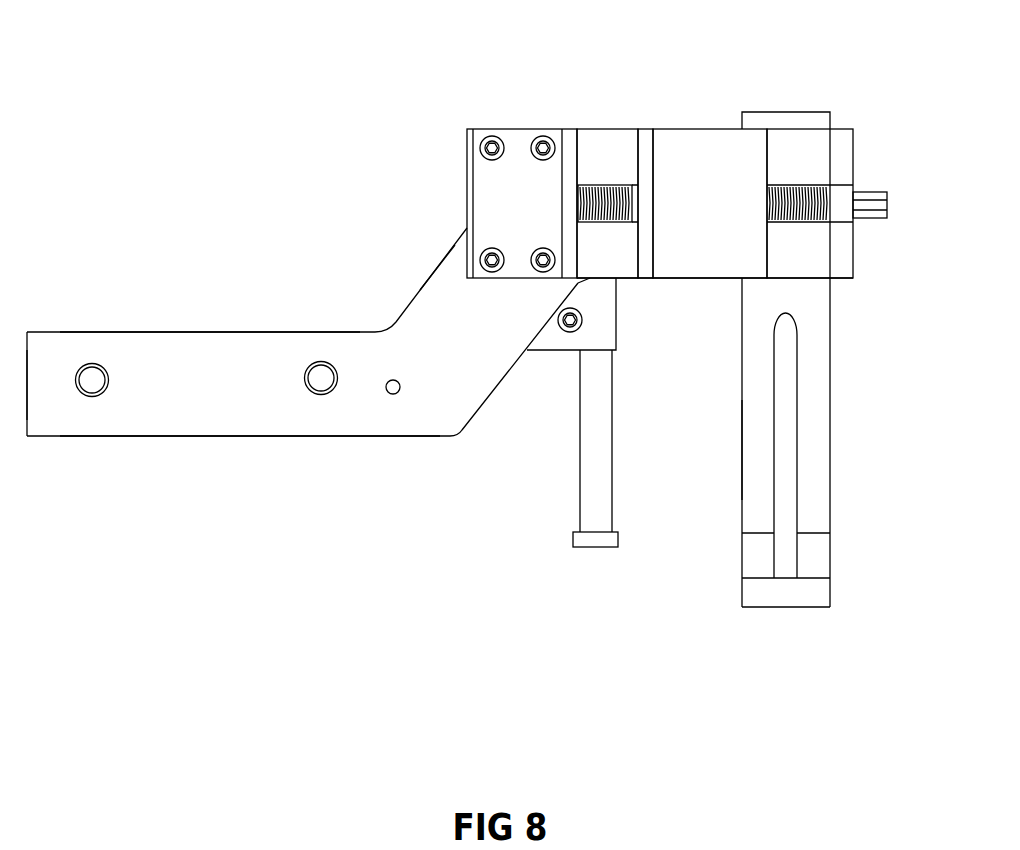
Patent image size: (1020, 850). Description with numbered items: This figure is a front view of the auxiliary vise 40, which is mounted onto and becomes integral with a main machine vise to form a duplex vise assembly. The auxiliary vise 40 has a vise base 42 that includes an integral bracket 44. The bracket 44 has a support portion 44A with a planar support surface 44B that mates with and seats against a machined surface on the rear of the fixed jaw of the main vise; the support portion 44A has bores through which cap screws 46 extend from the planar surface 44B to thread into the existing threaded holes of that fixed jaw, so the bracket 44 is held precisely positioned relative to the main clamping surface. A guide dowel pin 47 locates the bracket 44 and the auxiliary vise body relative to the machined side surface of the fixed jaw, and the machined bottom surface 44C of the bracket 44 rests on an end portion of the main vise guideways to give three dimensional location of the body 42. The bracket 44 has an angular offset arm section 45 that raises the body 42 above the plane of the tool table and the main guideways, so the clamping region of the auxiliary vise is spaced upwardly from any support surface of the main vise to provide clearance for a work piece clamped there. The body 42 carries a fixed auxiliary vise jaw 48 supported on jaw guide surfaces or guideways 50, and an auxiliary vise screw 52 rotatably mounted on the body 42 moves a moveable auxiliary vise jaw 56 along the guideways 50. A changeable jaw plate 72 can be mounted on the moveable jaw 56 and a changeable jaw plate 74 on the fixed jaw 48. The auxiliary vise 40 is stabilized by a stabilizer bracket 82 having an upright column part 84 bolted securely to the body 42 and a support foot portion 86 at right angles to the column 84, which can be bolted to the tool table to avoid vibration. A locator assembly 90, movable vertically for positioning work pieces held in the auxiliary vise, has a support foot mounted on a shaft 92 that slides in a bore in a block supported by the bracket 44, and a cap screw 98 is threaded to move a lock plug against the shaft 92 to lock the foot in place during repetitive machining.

The auxiliary vise 40 is at (545, 365).
The vise base 42 is at (697, 140).
The bracket 44 is at (240, 325).
The support portion 44A is at (355, 407).
The planar support surface 44B is at (122, 348).
The machined bottom surface 44C is at (57, 438).
The angular offset arm section 45 is at (440, 302).
The cap screws 46 is at (305, 420).
The guide dowel pin 47 is at (396, 394).
The fixed auxiliary vise jaw 48 is at (517, 142).
The guideways 50 is at (810, 263).
The auxiliary vise screw 52 is at (607, 190).
The moveable auxiliary vise jaw 56 is at (728, 143).
The changeable jaw plate 72 is at (644, 138).
The changeable jaw plate 74 is at (569, 143).
The stabilizer bracket 82 is at (738, 448).
The upright column part 84 is at (815, 318).
The support foot portion 86 is at (757, 590).
The locator assembly 90 is at (570, 550).
The shaft 92 is at (588, 512).
The cap screw 98 is at (576, 331).